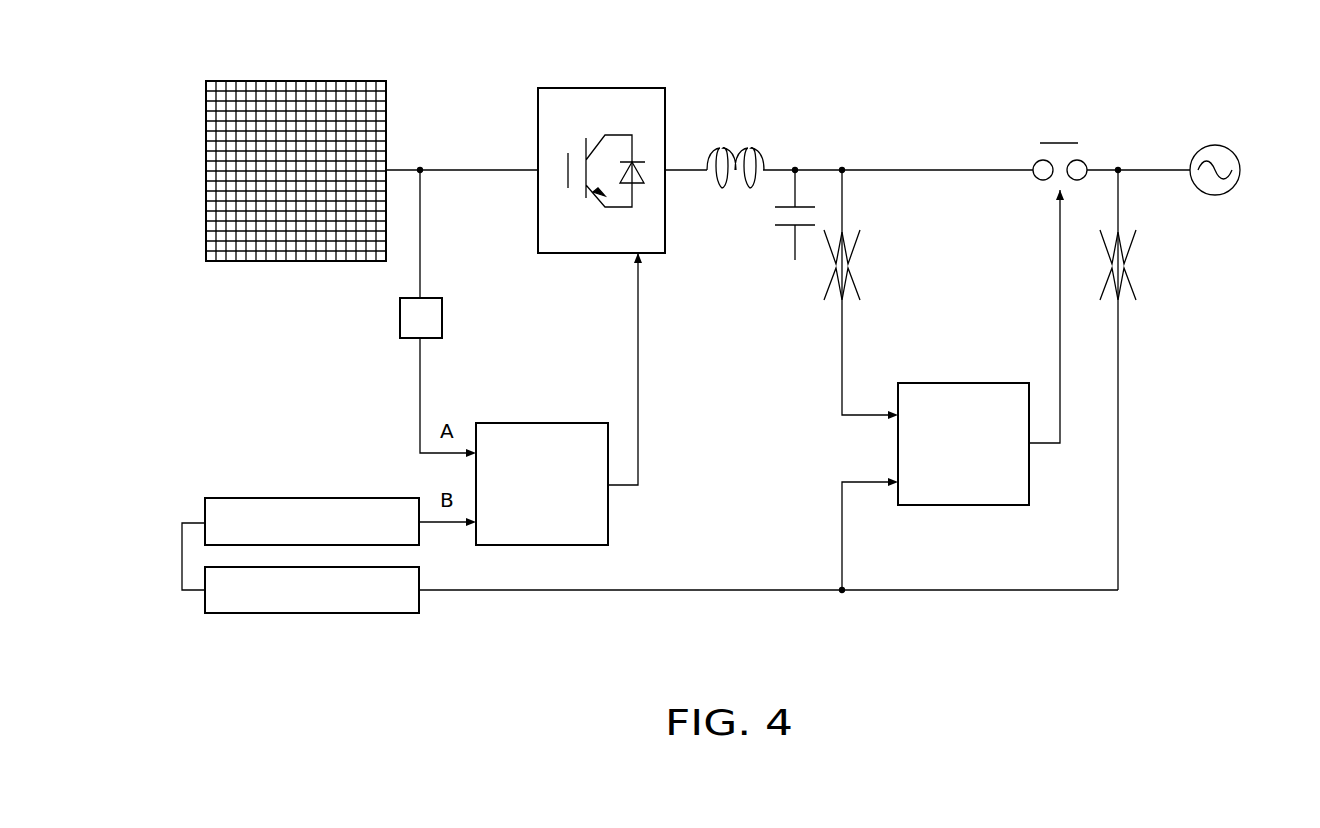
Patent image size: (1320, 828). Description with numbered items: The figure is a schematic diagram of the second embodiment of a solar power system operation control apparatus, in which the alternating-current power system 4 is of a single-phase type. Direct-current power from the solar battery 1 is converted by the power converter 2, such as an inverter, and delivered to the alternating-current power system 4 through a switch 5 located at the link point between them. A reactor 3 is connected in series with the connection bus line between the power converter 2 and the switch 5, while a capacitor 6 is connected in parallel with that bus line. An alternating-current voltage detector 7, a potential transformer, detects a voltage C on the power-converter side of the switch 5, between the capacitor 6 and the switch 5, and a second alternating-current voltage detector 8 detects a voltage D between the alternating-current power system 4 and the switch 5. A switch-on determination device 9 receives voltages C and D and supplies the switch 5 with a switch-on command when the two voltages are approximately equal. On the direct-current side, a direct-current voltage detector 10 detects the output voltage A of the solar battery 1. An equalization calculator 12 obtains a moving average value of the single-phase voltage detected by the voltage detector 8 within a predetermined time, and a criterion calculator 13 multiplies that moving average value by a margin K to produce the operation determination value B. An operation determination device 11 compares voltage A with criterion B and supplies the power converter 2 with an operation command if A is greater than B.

The solar battery 1 is at (300, 80).
The power converter 2 is at (637, 88).
The reactor 3 is at (740, 147).
The alternating-current power system 4 is at (1240, 148).
The switch 5 is at (1095, 118).
The capacitor 6 is at (775, 215).
The alternating-current voltage detector 7 is at (852, 262).
The alternating-current voltage detector 8 is at (1128, 262).
The switch-on determination device 9 is at (1015, 383).
The direct-current voltage detector 10 is at (400, 316).
The operation determination device 11 is at (593, 423).
The equalization calculator 12 is at (358, 614).
The criterion calculator 13 is at (362, 497).